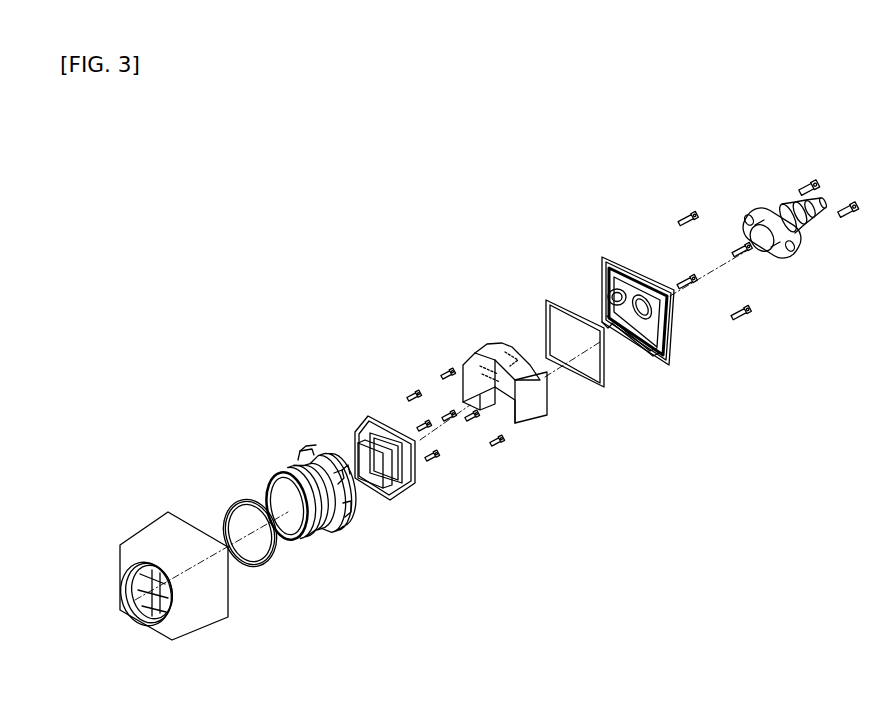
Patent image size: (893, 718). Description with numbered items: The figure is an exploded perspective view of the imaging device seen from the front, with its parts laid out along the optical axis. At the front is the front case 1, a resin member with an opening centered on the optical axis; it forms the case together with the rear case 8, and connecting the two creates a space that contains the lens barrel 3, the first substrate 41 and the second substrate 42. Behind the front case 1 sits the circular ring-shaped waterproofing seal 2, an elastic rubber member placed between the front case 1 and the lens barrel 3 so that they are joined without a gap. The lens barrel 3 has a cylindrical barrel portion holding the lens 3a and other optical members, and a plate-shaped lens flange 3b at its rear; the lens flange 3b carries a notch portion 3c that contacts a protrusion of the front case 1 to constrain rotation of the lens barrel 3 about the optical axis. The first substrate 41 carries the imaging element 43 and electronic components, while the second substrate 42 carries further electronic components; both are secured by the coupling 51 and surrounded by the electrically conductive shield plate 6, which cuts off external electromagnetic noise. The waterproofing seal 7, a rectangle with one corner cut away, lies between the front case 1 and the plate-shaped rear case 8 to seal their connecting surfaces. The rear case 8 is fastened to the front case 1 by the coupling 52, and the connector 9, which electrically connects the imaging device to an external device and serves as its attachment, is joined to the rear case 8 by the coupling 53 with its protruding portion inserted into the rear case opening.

The front case 1 is at (172, 537).
The waterproofing seal 2 is at (235, 497).
The lens barrel 3 is at (308, 500).
The lens 3a is at (290, 543).
The lens flange 3b is at (318, 455).
The notch portion 3c is at (330, 533).
The first substrate 41 is at (358, 428).
The second substrate 42 is at (385, 415).
The imaging element 43 is at (371, 452).
The coupling 51 is at (414, 392).
The coupling 52 is at (686, 213).
The coupling 53 is at (813, 180).
The shield plate 6 is at (501, 342).
The waterproofing seal 7 is at (553, 300).
The rear case 8 is at (624, 257).
The connector 9 is at (762, 208).